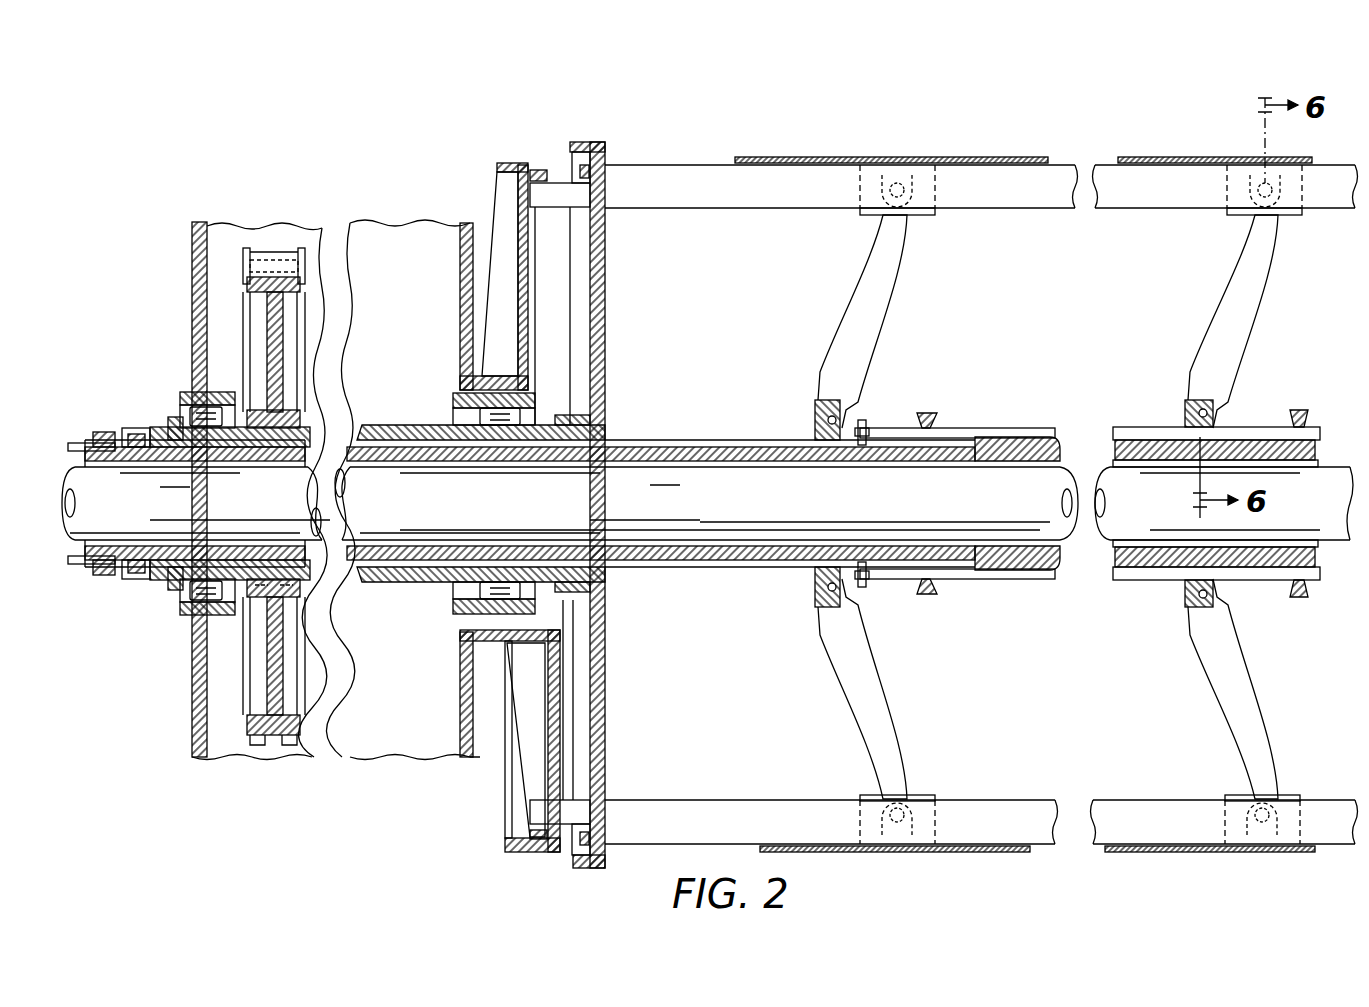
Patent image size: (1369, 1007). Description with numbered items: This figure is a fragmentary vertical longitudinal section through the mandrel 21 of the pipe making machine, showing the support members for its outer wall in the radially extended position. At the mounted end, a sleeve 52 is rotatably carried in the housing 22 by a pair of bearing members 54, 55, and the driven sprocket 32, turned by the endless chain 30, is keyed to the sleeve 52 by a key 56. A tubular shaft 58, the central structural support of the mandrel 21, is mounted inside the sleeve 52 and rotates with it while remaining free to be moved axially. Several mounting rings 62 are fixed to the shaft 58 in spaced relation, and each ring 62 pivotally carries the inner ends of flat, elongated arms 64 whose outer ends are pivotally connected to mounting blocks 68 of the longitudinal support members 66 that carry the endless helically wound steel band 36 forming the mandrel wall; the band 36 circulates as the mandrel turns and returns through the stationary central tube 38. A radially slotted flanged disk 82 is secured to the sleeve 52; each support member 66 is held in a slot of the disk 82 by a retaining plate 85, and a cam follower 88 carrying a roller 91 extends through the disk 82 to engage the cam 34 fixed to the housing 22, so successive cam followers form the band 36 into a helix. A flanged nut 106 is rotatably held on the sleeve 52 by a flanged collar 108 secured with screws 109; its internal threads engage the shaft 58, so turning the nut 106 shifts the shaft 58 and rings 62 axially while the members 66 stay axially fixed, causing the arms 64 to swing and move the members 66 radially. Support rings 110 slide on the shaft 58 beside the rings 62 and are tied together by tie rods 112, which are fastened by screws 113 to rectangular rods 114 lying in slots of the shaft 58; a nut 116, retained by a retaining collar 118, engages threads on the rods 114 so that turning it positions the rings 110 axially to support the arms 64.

The mandrel 21 is at (968, 122).
The housing 22 is at (335, 225).
The endless chain 30 is at (268, 257).
The driven sprocket 32 is at (273, 740).
The cam 34 is at (512, 165).
The helically wound steel band 36 is at (770, 158).
The stationary central tube 38 is at (863, 508).
The sleeve 52 is at (365, 440).
The bearing member 54 is at (186, 598).
The bearing member 55 is at (452, 410).
The key 56 is at (280, 590).
The tubular shaft 58 is at (1060, 440).
The mounting ring 62 is at (815, 422).
The arm 64 is at (870, 285).
The longitudinal support member 66 is at (1005, 208).
The mounting block 68 is at (872, 213).
The radially slotted flanged disk 82 is at (596, 142).
The retaining plate 85 is at (583, 165).
The cam follower 88 is at (560, 183).
The roller 91 is at (538, 172).
The flanged nut 106 is at (180, 410).
The flanged collar 108 is at (172, 420).
The screw 109 is at (140, 430).
The support ring 110 is at (956, 388).
The tie rod 112 is at (1003, 414).
The screw 113 is at (862, 424).
The rectangular rod 114 is at (670, 440).
The nut 116 is at (100, 432).
The retaining collar 118 is at (82, 443).